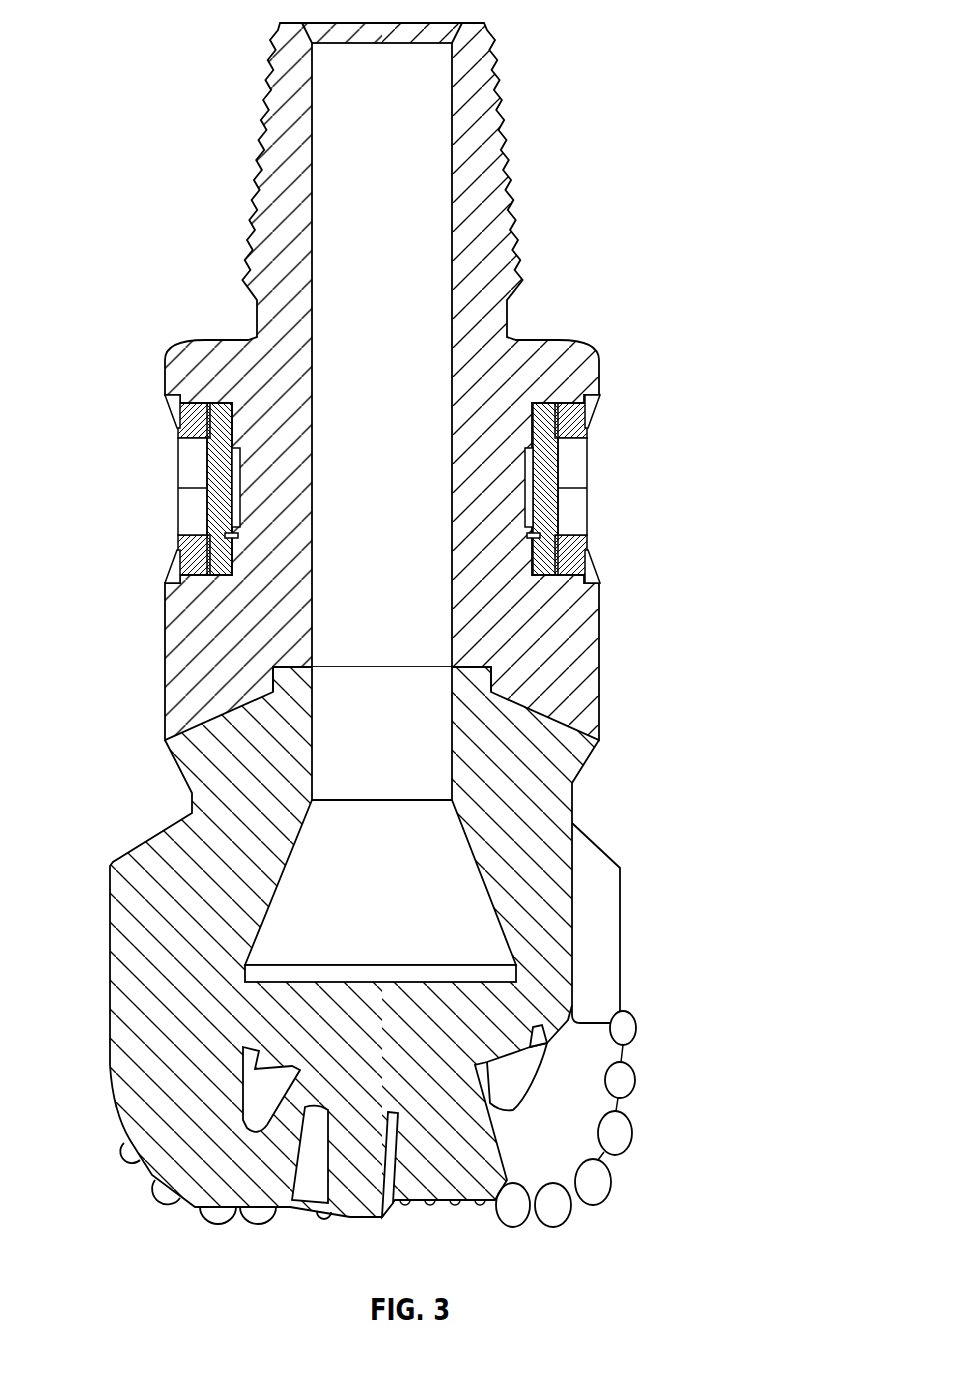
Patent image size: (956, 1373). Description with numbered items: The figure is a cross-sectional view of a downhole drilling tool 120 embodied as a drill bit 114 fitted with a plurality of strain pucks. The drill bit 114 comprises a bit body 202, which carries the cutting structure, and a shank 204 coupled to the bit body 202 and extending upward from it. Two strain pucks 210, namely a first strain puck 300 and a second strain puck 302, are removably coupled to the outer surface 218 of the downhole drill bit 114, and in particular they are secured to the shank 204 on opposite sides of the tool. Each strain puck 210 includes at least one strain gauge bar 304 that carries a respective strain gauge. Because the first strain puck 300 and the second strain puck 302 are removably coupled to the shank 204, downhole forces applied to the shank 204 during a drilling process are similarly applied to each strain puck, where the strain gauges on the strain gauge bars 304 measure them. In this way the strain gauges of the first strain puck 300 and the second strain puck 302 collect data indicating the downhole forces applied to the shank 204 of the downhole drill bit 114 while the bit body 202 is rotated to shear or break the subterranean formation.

The drill bit 114 is at (436, 917).
The downhole drilling tool 120 is at (403, 381).
The bit body 202 is at (137, 873).
The shank 204 is at (338, 381).
The strain pucks 210 is at (612, 444).
The outer surface 218 is at (163, 667).
The first strain puck 300 is at (168, 474).
The second strain puck 302 is at (595, 514).
The strain gauge bar 304 is at (584, 428).